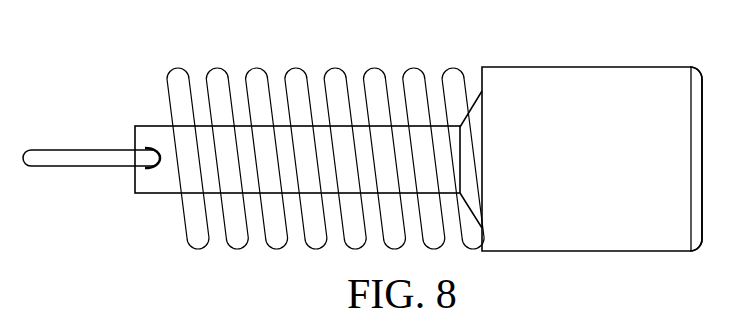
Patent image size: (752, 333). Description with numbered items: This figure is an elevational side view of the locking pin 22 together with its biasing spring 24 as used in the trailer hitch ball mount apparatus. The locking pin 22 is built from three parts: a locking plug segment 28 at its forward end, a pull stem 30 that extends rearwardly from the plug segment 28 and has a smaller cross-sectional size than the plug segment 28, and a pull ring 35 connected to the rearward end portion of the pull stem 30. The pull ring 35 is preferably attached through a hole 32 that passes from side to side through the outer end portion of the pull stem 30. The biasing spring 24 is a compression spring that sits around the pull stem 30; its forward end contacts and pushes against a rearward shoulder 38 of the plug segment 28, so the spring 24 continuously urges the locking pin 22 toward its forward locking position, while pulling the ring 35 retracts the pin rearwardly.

The locking pin 22 is at (590, 66).
The biasing spring 24 is at (297, 68).
The locking plug segment 28 is at (670, 253).
The pull stem 30 is at (151, 123).
The hole 32 is at (155, 172).
The pull ring 35 is at (62, 150).
The rearward shoulder 38 is at (471, 92).